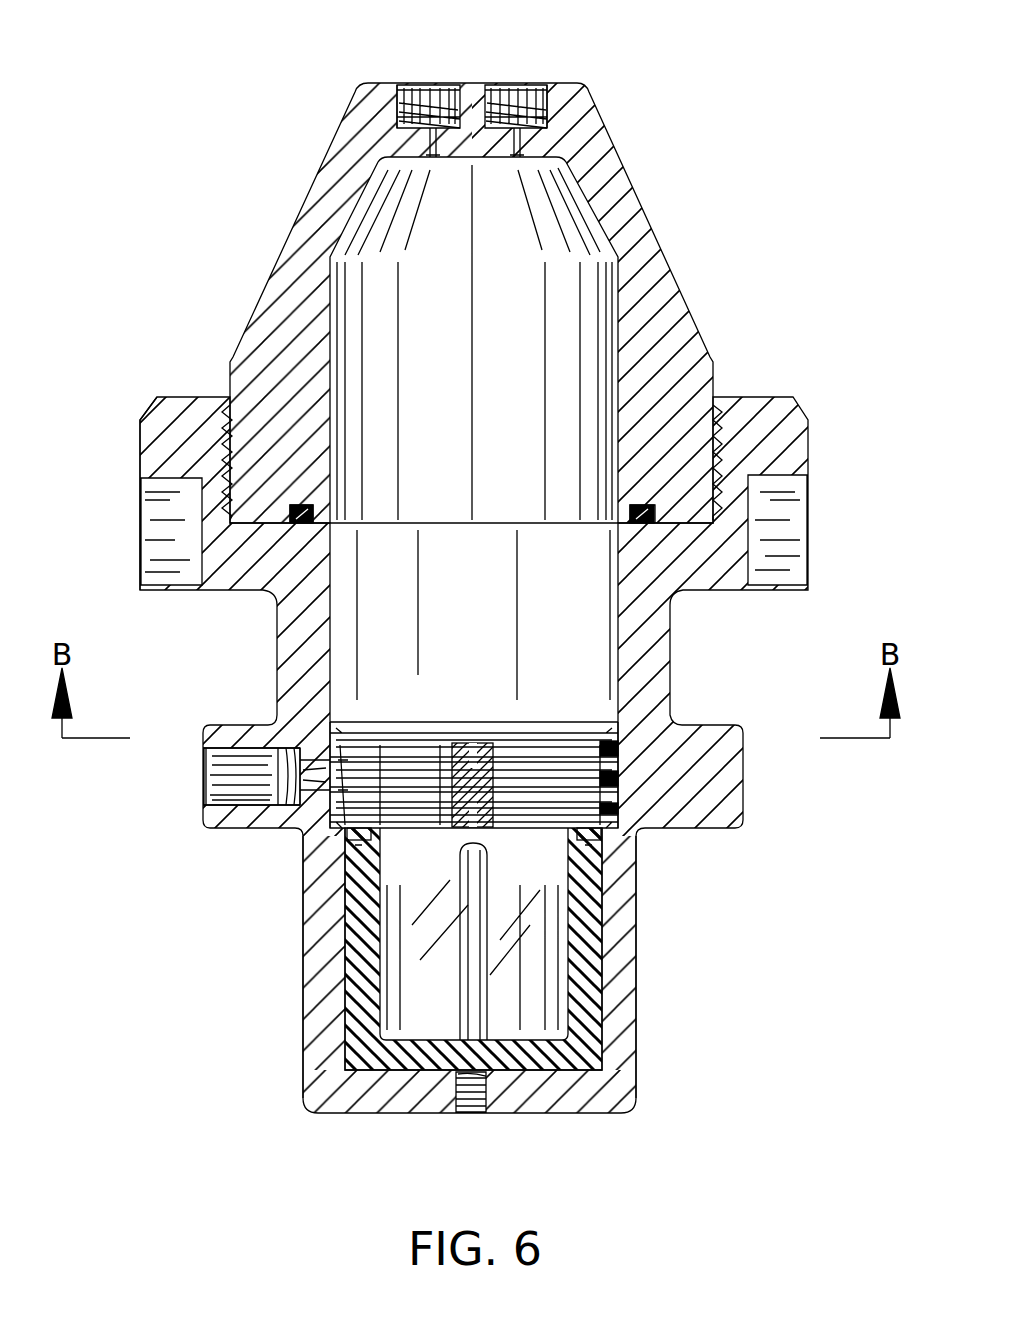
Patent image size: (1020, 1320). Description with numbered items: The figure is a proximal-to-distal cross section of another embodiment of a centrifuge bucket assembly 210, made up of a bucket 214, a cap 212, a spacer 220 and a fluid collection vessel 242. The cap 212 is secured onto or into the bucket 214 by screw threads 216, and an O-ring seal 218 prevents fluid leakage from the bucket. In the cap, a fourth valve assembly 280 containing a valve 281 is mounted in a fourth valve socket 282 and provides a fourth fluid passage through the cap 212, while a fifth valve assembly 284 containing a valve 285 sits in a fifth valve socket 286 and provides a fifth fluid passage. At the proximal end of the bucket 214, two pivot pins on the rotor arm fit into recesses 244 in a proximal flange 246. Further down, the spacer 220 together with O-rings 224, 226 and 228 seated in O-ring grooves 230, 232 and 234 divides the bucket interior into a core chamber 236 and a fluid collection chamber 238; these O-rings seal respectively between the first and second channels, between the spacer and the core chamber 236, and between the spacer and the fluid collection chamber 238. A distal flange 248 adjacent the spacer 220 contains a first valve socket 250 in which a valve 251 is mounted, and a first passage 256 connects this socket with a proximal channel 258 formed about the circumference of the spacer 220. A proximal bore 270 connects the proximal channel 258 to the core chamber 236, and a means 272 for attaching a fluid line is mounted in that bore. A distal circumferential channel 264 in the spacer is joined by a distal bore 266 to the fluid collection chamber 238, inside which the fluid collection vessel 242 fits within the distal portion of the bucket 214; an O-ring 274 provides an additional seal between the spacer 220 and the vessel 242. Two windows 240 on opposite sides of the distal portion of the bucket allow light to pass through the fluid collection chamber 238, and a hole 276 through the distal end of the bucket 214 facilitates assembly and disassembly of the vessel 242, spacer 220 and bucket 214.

The centrifuge bucket assembly 210 is at (690, 208).
The cap 212 is at (672, 280).
The bucket 214 is at (668, 642).
The screw threads 216 is at (722, 412).
The O-ring seal 218 is at (634, 508).
The spacer 220 is at (535, 740).
The O-ring 224 is at (618, 757).
The O-ring 226 is at (618, 785).
The O-ring 228 is at (618, 812).
The O-ring groove 230 is at (550, 785).
The O-ring groove 232 is at (545, 765).
The O-ring groove 234 is at (580, 832).
The core chamber 236 is at (450, 395).
The fluid collection chamber 238 is at (360, 965).
The windows 240 is at (470, 1008).
The fluid collection vessel 242 is at (612, 1018).
The recesses 244 is at (160, 540).
The proximal flange 246 is at (152, 448).
The distal flange 248 is at (200, 740).
The first valve socket 250 is at (215, 806).
The valve 251 is at (216, 757).
The first passage 256 is at (308, 790).
The proximal channel 258 is at (385, 780).
The distal circumferential channel 264 is at (372, 832).
The distal bore 266 is at (490, 862).
The proximal bore 270 is at (460, 740).
The means for attaching a fluid line 272 is at (490, 740).
The O-ring 274 is at (375, 852).
The hole 276 is at (472, 1114).
The fourth valve assembly 280 is at (436, 92).
The valve 281 is at (422, 95).
The fourth valve socket 282 is at (398, 88).
The fifth valve assembly 284 is at (510, 92).
The valve 285 is at (528, 95).
The fifth valve socket 286 is at (553, 88).